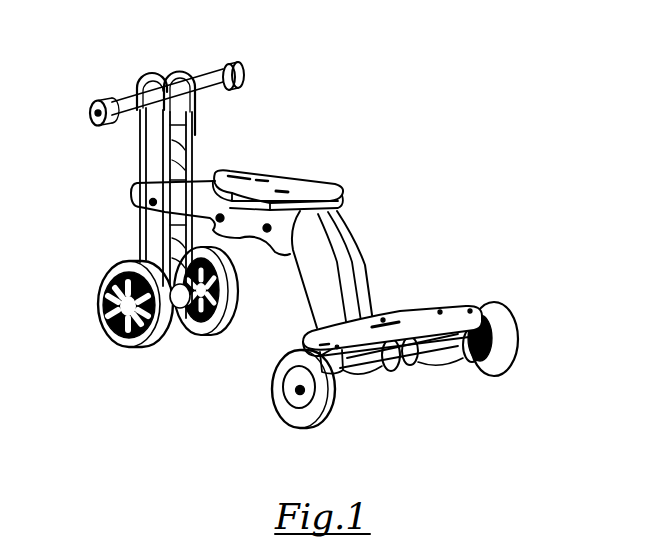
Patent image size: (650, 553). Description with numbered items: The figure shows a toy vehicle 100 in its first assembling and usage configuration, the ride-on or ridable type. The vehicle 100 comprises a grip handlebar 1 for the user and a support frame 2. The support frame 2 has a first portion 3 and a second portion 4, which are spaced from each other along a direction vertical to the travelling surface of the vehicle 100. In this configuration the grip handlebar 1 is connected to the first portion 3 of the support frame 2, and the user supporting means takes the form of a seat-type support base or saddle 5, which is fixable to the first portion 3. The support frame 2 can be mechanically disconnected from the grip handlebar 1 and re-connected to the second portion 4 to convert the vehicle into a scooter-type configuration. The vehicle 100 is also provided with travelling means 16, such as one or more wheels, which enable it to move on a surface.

The grip handlebar 1 is at (160, 69).
The support frame 2 is at (288, 257).
The first portion 3 is at (132, 194).
The second portion 4 is at (390, 380).
The seat-type support base or saddle 5 is at (258, 170).
The travelling means 16 is at (250, 410).
The toy vehicle 100 is at (412, 231).